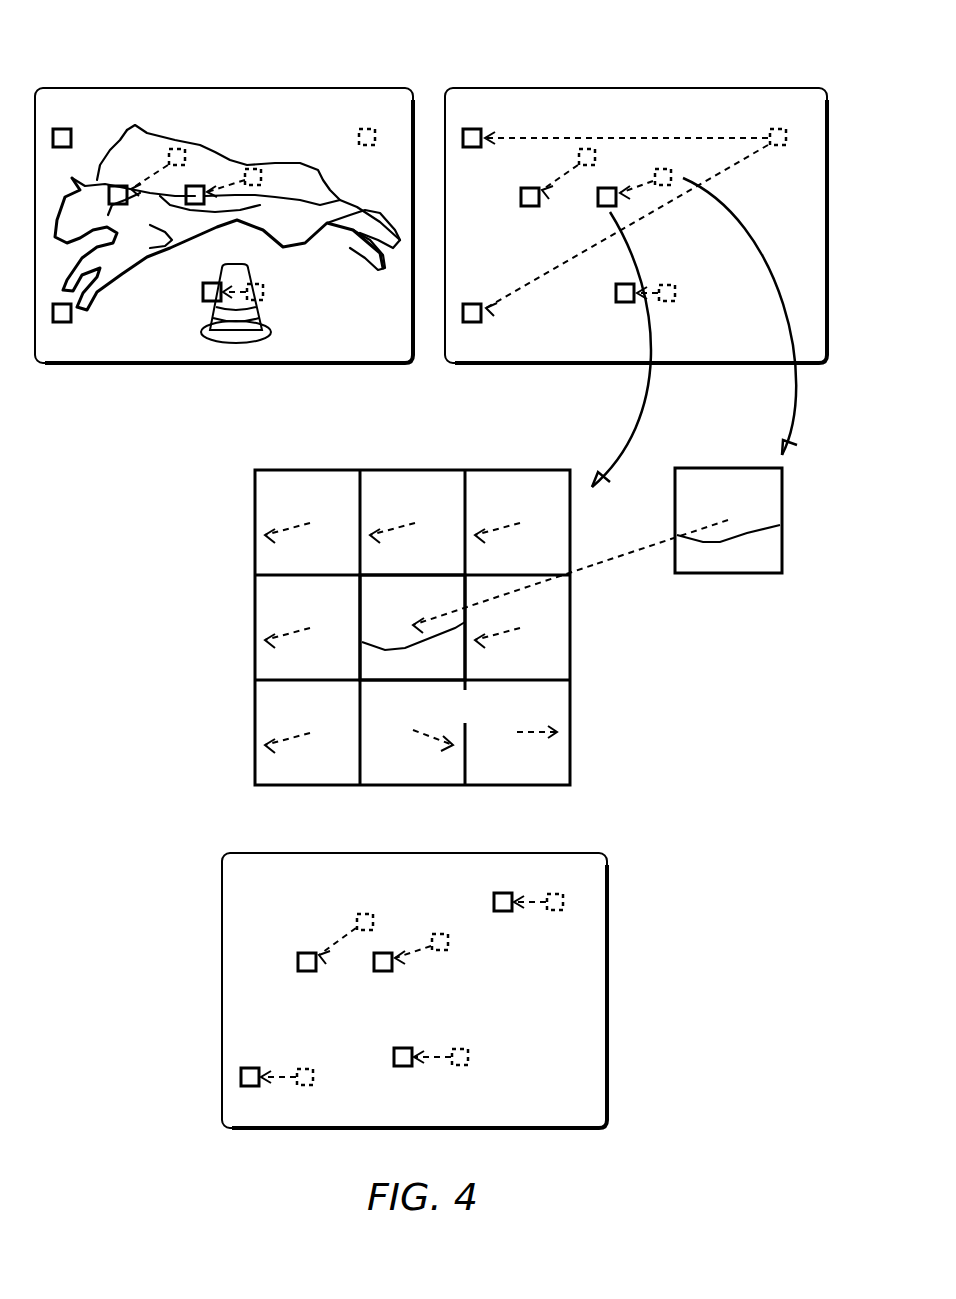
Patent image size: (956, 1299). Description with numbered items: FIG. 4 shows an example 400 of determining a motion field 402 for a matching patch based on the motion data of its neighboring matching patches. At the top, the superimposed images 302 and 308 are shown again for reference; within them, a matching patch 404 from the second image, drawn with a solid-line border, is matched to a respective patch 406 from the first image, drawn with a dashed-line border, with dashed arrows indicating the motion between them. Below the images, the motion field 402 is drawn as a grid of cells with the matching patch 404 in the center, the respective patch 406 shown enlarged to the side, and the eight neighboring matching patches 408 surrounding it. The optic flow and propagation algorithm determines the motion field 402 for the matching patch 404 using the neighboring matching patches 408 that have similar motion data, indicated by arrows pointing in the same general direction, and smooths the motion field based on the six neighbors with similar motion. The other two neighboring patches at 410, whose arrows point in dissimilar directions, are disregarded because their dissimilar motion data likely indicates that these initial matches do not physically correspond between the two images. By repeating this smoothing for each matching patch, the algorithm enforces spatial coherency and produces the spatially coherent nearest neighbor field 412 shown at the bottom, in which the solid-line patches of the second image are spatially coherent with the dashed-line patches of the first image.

The example 400 is at (512, 58).
The superimposed image 302 is at (262, 88).
The superimposed image 308 is at (667, 88).
The matching patch 404 is at (203, 185).
The respective patch 406 is at (250, 173).
The motion field 402 is at (468, 455).
The neighboring matching patches 408 is at (268, 698).
The neighboring matching patches with dissimilar motion data 410 is at (482, 718).
The spatially coherent nearest neighbor field 412 is at (590, 832).